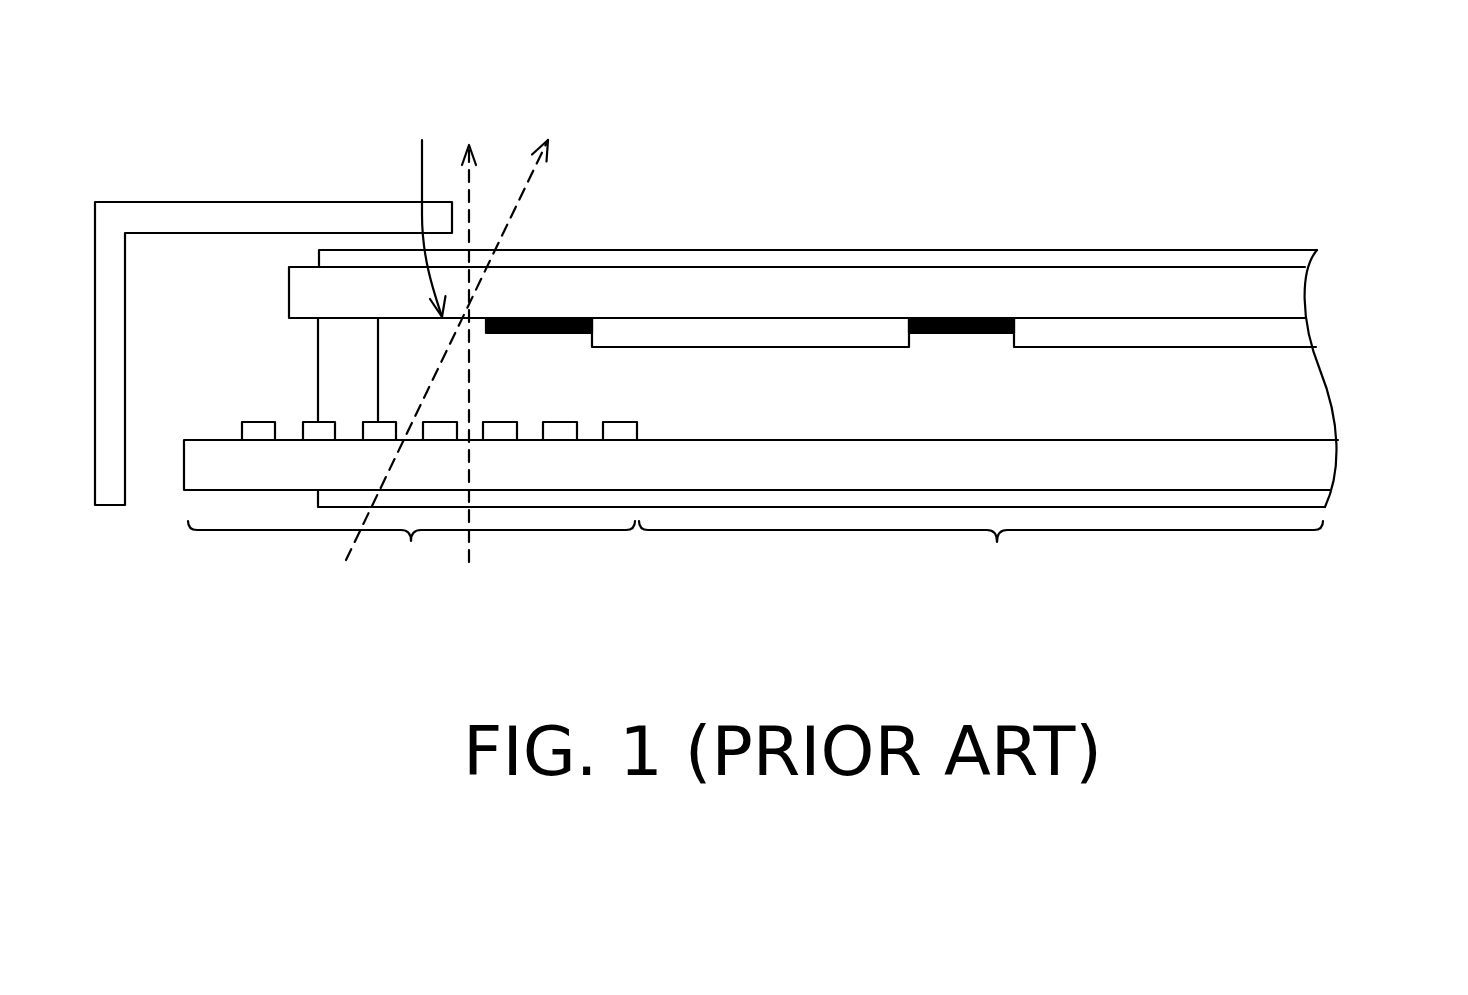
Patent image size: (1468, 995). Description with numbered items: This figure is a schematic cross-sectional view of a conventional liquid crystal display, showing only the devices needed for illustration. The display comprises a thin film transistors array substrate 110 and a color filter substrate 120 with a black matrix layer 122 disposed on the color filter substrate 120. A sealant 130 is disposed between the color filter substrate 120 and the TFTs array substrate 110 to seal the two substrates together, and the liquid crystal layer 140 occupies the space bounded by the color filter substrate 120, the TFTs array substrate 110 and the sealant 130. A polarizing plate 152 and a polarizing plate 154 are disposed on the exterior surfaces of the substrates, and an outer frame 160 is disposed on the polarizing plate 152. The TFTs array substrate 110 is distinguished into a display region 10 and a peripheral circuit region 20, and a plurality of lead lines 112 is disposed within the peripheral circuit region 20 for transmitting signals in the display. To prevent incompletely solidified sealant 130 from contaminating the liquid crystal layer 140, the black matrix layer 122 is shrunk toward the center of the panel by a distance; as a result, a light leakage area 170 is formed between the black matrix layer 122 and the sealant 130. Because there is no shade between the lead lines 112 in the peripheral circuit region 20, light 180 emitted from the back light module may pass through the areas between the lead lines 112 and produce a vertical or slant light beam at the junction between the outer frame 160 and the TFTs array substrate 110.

The display region 10 is at (981, 559).
The peripheral circuit region 20 is at (411, 559).
The thin film transistors array substrate 110 is at (1327, 463).
The lead lines 112 is at (620, 422).
The color filter substrate 120 is at (1333, 270).
The black matrix layer 122 is at (558, 318).
The sealant 130 is at (341, 347).
The liquid crystal layer 140 is at (1323, 402).
The polarizing plate 152 is at (1303, 260).
The polarizing plate 154 is at (1317, 498).
The outer frame 160 is at (230, 218).
The light leakage area 170 is at (420, 199).
The light 180 is at (512, 212).